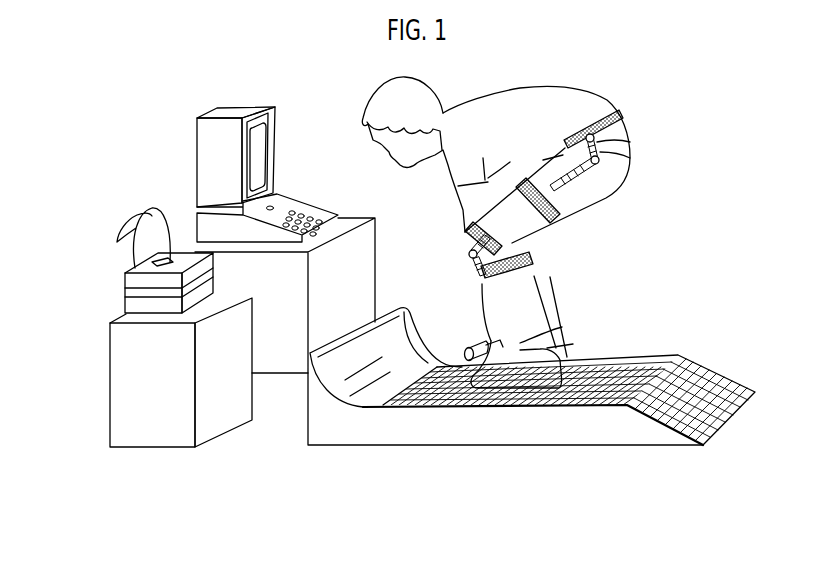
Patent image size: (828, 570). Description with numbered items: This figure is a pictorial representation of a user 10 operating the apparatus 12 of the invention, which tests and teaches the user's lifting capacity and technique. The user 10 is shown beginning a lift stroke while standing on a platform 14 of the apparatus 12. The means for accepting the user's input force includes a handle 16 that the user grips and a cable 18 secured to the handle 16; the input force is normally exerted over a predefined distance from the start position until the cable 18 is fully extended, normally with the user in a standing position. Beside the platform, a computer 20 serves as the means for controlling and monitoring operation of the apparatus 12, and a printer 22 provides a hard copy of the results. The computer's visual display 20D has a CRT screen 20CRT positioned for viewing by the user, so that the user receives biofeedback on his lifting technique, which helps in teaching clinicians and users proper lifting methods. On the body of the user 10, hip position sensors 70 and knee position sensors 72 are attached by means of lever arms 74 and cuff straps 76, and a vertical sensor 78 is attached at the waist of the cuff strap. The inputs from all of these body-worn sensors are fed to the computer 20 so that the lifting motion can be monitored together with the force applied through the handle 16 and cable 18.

The user 10 is at (571, 90).
The apparatus 12 is at (297, 109).
The platform 14 is at (607, 368).
The handle 16 is at (468, 348).
The cable 18 is at (557, 329).
The computer 20 is at (207, 143).
The visual display 20D is at (208, 123).
The CRT screen 20CRT is at (264, 163).
The printer 22 is at (138, 283).
The hip position sensors 70 is at (617, 172).
The knee position sensors 72 is at (462, 253).
The lever arms 74 is at (607, 143).
The cuff straps 76 is at (621, 115).
The vertical sensor 78 is at (585, 133).